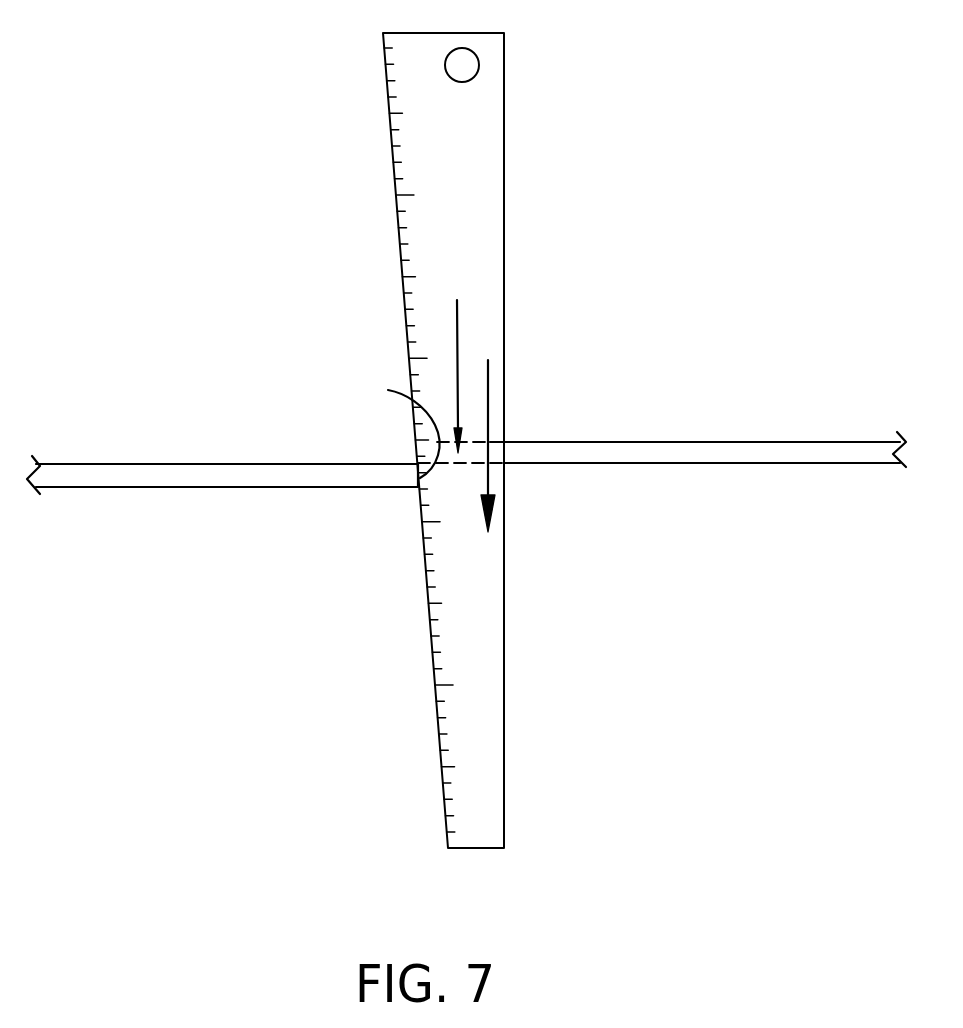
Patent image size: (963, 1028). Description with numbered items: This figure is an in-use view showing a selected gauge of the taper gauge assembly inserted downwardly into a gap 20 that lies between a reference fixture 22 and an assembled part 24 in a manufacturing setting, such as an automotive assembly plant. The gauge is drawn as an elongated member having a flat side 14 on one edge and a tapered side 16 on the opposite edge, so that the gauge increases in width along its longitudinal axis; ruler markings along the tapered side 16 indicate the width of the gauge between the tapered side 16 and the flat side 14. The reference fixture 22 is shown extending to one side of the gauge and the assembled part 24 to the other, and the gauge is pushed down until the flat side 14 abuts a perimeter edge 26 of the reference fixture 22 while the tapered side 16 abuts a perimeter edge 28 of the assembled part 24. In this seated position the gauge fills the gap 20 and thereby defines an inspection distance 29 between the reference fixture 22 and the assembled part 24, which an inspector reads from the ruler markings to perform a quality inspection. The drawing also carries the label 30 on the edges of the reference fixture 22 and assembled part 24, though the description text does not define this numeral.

The flat side 14 is at (498, 123).
The tapered side 16 is at (395, 152).
The gap 20 is at (488, 360).
The reference fixture 22 is at (838, 449).
The assembled part 24 is at (325, 463).
The perimeter edge 26 is at (503, 463).
The perimeter edge 28 is at (391, 418).
The inspection distance 29 is at (457, 300).
The tape edge 30 is at (148, 463).